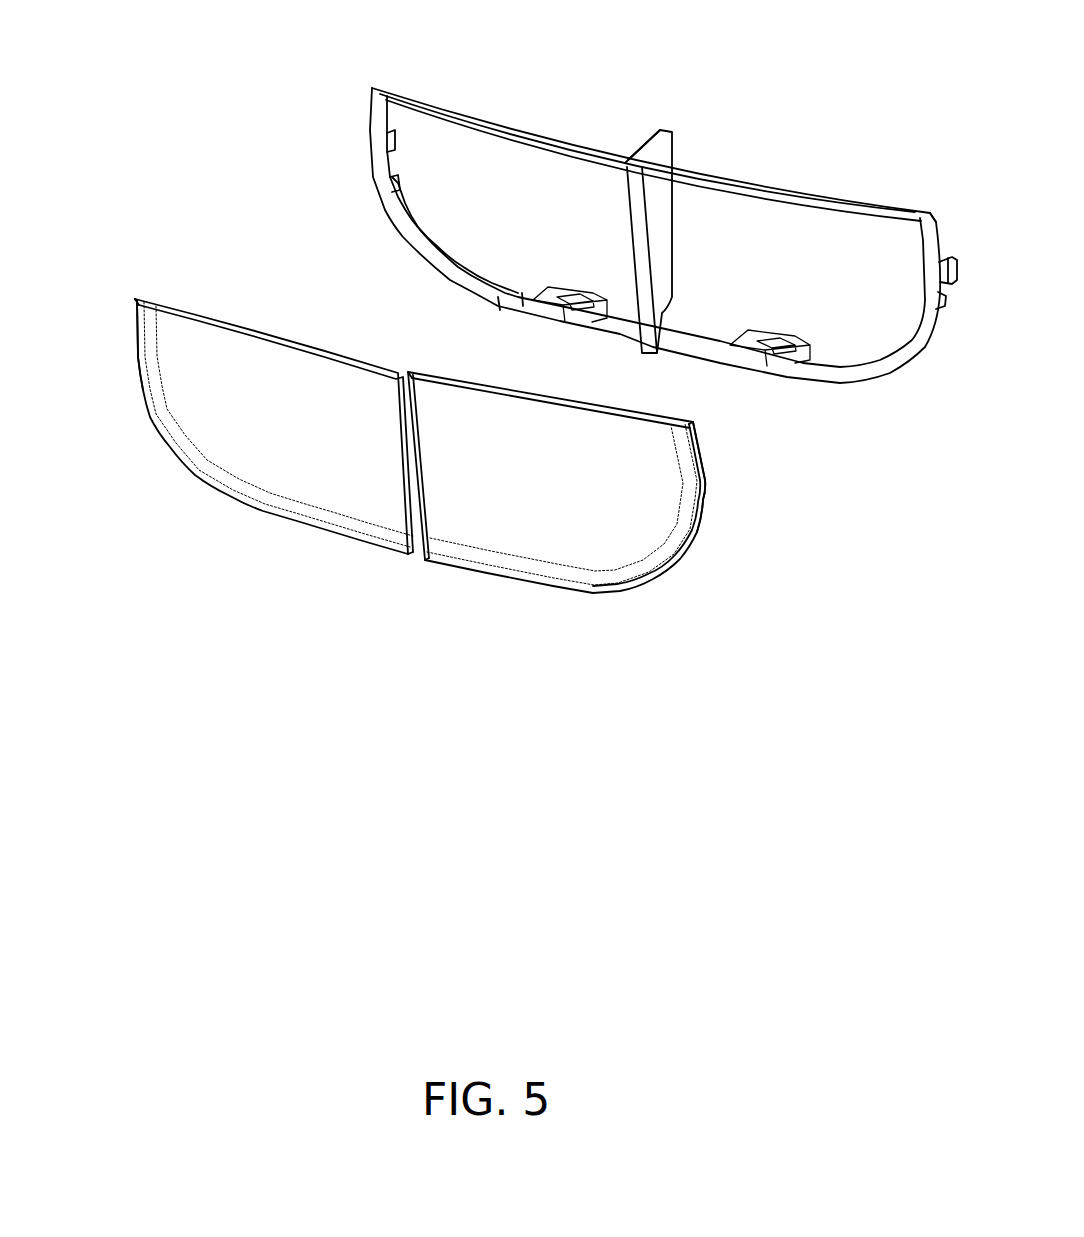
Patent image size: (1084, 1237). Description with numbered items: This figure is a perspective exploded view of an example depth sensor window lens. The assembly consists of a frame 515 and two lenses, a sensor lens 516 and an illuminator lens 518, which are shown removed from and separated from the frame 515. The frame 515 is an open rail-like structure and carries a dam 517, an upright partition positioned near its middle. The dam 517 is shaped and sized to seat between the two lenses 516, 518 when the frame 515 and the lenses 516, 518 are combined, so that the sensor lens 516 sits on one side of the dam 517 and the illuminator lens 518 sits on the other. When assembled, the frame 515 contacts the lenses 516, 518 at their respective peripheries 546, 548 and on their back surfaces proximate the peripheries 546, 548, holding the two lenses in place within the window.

The frame 515 is at (360, 83).
The dam 517 is at (677, 147).
The sensor lens 516 is at (220, 433).
The illuminator lens 518 is at (618, 530).
The periphery 546 is at (141, 369).
The periphery 548 is at (704, 514).